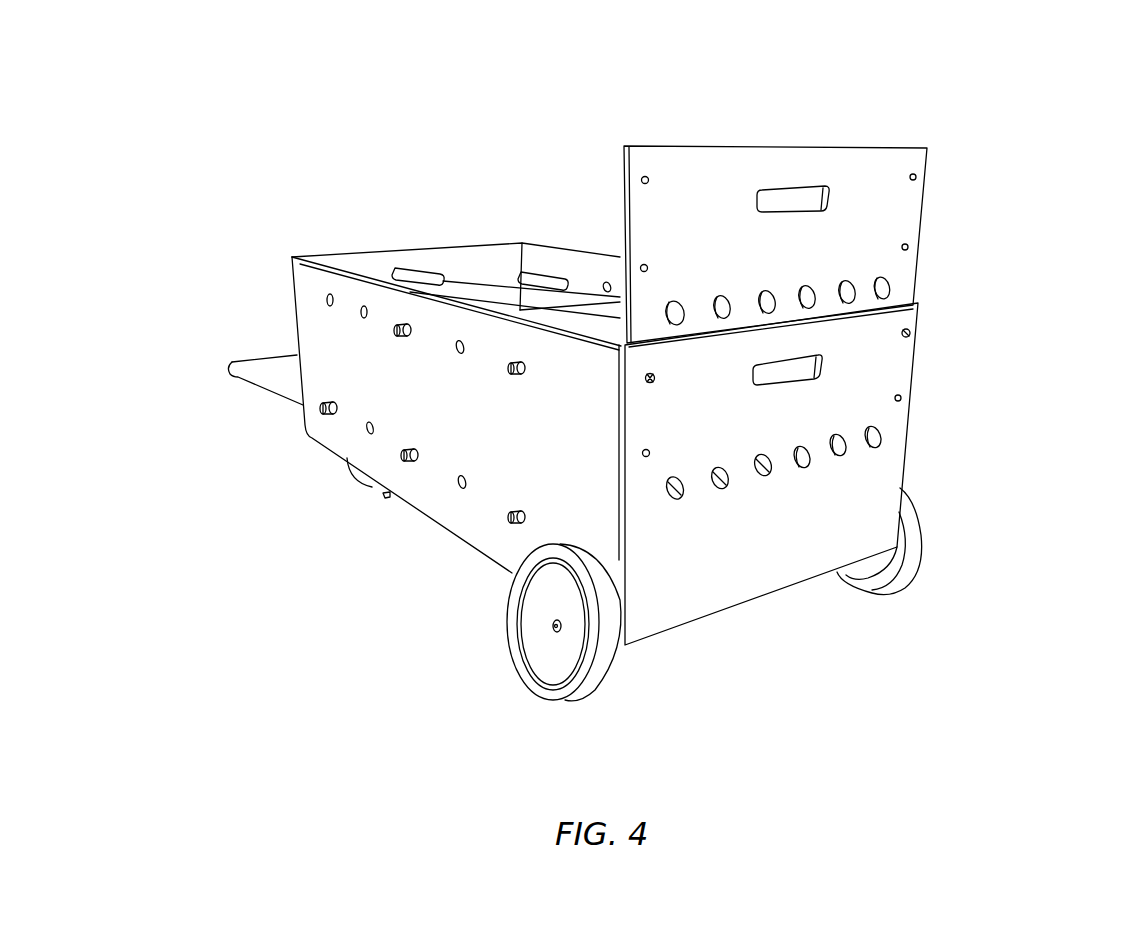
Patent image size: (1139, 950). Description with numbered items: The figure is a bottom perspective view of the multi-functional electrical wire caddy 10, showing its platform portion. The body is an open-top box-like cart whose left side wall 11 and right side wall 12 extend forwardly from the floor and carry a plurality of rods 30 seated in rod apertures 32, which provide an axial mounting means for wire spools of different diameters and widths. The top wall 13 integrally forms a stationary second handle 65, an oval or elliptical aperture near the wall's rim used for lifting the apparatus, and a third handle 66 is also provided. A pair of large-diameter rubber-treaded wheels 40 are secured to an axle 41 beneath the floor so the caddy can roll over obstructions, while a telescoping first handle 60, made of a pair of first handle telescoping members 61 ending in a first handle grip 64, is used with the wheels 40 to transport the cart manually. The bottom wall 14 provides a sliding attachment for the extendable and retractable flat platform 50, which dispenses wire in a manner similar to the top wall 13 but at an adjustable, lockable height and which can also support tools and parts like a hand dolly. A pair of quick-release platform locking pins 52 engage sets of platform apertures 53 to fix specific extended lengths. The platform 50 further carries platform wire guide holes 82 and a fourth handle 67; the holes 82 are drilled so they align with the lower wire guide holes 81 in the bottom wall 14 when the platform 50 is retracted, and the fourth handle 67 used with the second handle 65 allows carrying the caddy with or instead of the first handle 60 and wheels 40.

The multi-functional electrical wire caddy 10 is at (1062, 190).
The left side wall 11 is at (480, 533).
The right side wall 12 is at (548, 262).
The top wall 13 is at (367, 258).
The bottom wall 14 is at (895, 447).
The rod 30 is at (535, 308).
The rod aperture 32 is at (363, 310).
The wheel 40 is at (567, 707).
The axle 41 is at (553, 628).
The platform 50 is at (727, 170).
The platform locking pin 52 is at (655, 380).
The platform aperture 53 is at (646, 265).
The first handle 60 is at (222, 362).
The first handle telescoping member 61 is at (277, 397).
The first handle grip 64 is at (262, 355).
The second handle 65 is at (412, 272).
The third handle 66 is at (820, 368).
The fourth handle 67 is at (795, 185).
The lower wire guide hole 81 is at (873, 448).
The platform wire guide hole 82 is at (882, 284).